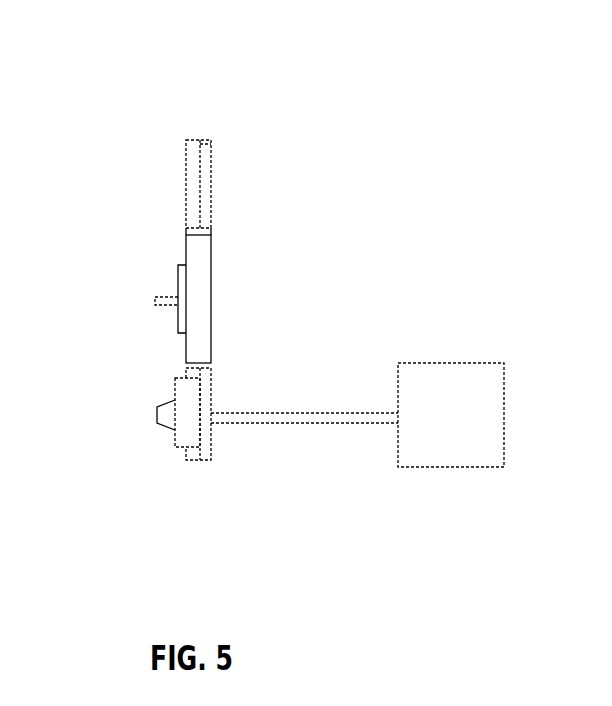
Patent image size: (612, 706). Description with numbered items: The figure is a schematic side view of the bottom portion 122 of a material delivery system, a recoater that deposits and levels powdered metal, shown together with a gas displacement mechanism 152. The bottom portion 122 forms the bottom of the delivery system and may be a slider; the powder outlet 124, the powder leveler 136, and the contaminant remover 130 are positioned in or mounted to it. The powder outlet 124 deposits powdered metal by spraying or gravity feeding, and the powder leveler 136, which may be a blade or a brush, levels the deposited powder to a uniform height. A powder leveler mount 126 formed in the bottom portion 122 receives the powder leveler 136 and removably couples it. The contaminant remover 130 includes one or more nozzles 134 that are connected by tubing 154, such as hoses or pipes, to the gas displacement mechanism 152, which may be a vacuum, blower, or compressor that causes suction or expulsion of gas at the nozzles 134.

The bottom portion 122 is at (176, 96).
The powder outlet 124 is at (186, 365).
The powder leveler mount 126 is at (186, 253).
The contaminant remover 130 is at (175, 393).
The nozzles 134 is at (155, 415).
The powder leveler 136 is at (183, 268).
The gas displacement mechanism 152 is at (460, 373).
The tubing 154 is at (288, 418).